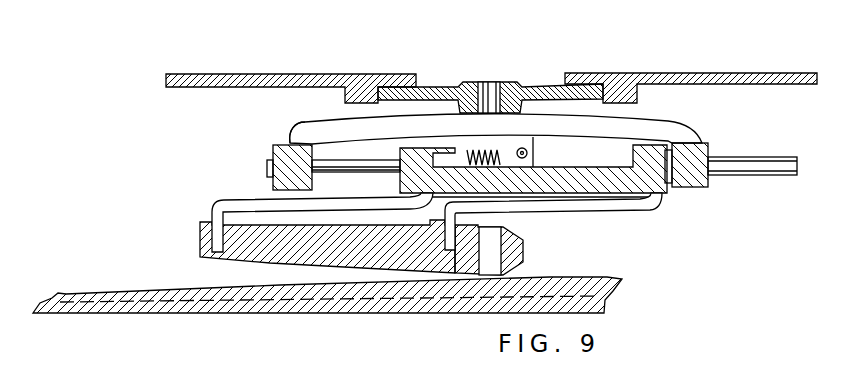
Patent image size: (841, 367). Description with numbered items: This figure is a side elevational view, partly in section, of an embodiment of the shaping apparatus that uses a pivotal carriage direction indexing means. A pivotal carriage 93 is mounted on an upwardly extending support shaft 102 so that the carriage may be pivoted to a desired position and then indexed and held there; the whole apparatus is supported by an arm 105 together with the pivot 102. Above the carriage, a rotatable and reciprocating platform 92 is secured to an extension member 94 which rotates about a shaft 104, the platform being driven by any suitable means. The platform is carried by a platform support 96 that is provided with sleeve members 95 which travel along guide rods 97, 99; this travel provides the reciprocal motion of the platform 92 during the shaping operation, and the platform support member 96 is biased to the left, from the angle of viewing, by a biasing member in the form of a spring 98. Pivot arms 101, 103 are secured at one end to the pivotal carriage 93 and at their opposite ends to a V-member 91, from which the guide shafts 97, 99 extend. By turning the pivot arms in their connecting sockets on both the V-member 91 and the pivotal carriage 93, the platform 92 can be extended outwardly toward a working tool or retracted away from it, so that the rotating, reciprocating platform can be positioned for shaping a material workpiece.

The V-member 91 is at (665, 194).
The rotatable and reciprocating platform 92 is at (380, 74).
The pivotal carriage 93 is at (240, 257).
The extension member 94 is at (441, 86).
The sleeve members 95 is at (273, 148).
The platform support 96 is at (292, 130).
The guide rod 97 is at (750, 176).
The spring 98 is at (428, 116).
The guide rod 99 is at (348, 176).
The pivot arm 101 is at (212, 207).
The support shaft 102 is at (497, 220).
The pivot arm 103 is at (577, 213).
The shaft 104 is at (498, 82).
The arm 105 is at (578, 318).